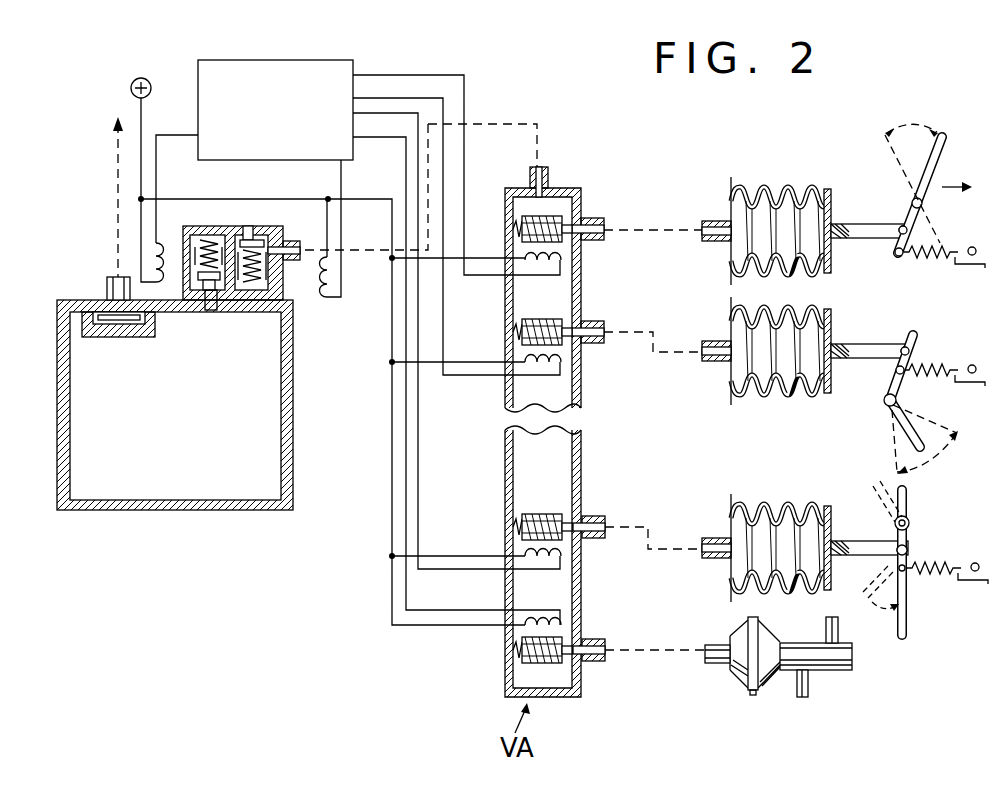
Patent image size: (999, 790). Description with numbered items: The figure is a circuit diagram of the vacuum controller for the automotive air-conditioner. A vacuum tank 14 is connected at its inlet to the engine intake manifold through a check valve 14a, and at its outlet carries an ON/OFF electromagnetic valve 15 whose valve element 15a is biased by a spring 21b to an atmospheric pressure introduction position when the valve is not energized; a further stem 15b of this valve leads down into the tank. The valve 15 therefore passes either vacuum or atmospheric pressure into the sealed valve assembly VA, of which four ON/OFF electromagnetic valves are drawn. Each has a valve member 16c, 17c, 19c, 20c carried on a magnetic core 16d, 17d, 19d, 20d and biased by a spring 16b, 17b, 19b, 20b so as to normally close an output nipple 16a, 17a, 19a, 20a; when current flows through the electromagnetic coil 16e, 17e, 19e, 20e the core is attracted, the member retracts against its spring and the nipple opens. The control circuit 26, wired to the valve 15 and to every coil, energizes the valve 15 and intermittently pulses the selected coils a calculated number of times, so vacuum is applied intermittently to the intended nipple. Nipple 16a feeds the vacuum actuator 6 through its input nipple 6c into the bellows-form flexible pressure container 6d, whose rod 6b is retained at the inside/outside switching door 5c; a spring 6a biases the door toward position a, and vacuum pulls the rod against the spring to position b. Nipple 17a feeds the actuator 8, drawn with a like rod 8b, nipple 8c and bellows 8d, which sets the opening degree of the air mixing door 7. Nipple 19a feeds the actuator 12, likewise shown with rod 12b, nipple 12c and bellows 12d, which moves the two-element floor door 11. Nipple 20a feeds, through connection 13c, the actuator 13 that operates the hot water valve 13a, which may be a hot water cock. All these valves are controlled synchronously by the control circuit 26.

The control circuit 26 is at (232, 60).
The spring 21b is at (190, 250).
The electromagnetic valve 15 is at (184, 261).
The valve element 15a is at (255, 236).
The valve stem 15b is at (212, 302).
The vacuum tank 14 is at (57, 470).
The check valve 14a is at (108, 284).
The output nipple 16a is at (596, 218).
The spring 16b is at (546, 186).
The valve member 16c is at (567, 279).
The magnetic core 16d is at (513, 228).
The electromagnetic coil 16e is at (561, 265).
The output nipple 17a is at (594, 323).
The spring 17b is at (513, 318).
The valve member 17c is at (559, 348).
The magnetic core 17d is at (513, 333).
The electromagnetic coil 17e is at (575, 378).
The output nipple 19a is at (597, 518).
The spring 19b is at (513, 513).
The valve member 19c is at (543, 561).
The magnetic core 19d is at (513, 528).
The electromagnetic coil 19e is at (576, 575).
The output nipple 20a is at (597, 642).
The spring 20b is at (507, 680).
The valve member 20c is at (552, 648).
The magnetic core 20d is at (513, 651).
The electromagnetic coil 20e is at (522, 612).
The vacuum actuator 6 is at (797, 215).
The spring 6a is at (921, 265).
The rod 6b is at (868, 224).
The input nipple 6c is at (712, 222).
The flexible pressure container 6d is at (770, 193).
The switching door 5c is at (940, 150).
The air mixing door 7 is at (915, 440).
The actuator 8 is at (797, 344).
The actuator rod 8b is at (868, 345).
The actuator port 8c is at (712, 343).
The bellows 8d is at (775, 297).
The floor door 11 is at (908, 505).
The actuator 12 is at (793, 531).
The actuator rod 12b is at (840, 542).
The actuator port 12c is at (712, 538).
The bellows 12d is at (790, 505).
The actuator 13 is at (797, 680).
The hot water valve 13a is at (835, 672).
The horn pipe 13c is at (716, 664).